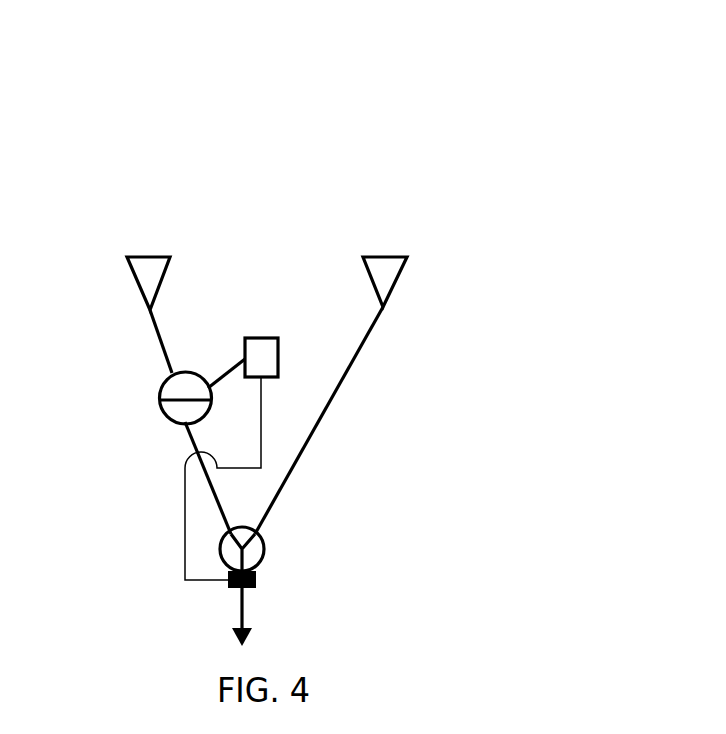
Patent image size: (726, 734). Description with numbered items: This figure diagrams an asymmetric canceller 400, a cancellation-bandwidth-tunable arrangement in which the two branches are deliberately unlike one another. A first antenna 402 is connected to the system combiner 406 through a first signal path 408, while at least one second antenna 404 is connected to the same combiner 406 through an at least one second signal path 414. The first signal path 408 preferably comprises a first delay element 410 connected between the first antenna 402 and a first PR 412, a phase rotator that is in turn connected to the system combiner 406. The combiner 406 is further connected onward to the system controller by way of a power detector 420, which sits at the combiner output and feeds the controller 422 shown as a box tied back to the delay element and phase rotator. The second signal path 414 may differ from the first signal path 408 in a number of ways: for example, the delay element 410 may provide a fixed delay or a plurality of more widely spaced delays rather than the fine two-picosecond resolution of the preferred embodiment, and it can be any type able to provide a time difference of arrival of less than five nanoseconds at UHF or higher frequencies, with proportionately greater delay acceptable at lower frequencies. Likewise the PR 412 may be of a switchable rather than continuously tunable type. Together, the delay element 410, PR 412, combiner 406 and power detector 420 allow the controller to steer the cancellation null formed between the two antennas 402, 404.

The asymmetric canceller 400 is at (263, 152).
The first antenna 402 is at (147, 277).
The second antenna 404 is at (385, 279).
The system combiner 406 is at (266, 553).
The first signal path 408 is at (153, 334).
The first delay element 410 is at (157, 387).
The first PR 412 is at (158, 417).
The second signal path 414 is at (377, 334).
The power detector 420 is at (260, 583).
The controller 422 is at (254, 355).